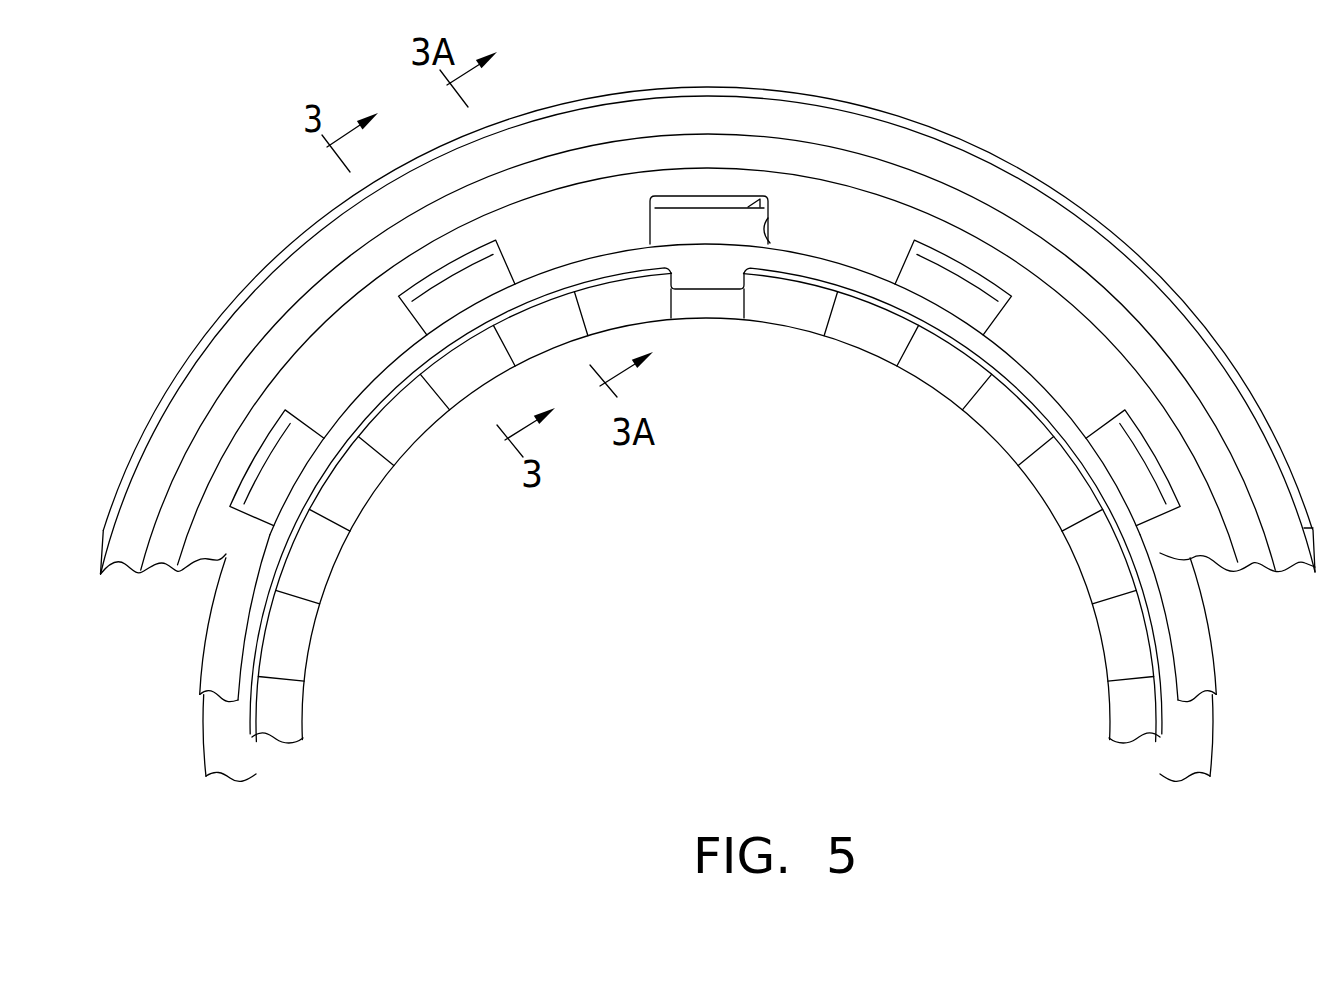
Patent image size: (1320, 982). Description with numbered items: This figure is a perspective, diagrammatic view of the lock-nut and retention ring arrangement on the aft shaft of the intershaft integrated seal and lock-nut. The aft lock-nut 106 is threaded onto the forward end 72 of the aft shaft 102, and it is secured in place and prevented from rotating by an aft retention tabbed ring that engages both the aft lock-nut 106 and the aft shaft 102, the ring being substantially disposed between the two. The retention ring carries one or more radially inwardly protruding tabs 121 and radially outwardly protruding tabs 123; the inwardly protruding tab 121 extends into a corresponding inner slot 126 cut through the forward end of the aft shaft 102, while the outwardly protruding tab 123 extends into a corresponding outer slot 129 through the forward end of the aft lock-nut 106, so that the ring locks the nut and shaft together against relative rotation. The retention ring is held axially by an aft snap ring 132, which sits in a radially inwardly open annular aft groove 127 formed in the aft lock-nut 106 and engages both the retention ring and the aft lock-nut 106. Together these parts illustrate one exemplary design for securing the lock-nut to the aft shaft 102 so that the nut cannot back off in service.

The forward end 72 is at (860, 328).
The aft shaft 102 is at (847, 332).
The aft lock-nut 106 is at (1034, 210).
The radially inwardly protruding tab 121 is at (705, 268).
The radially outwardly protruding tab 123 is at (763, 203).
The inner slot 126 is at (738, 309).
The annular aft groove 127 is at (223, 557).
The outer slot 129 is at (768, 220).
The aft snap ring 132 is at (657, 234).